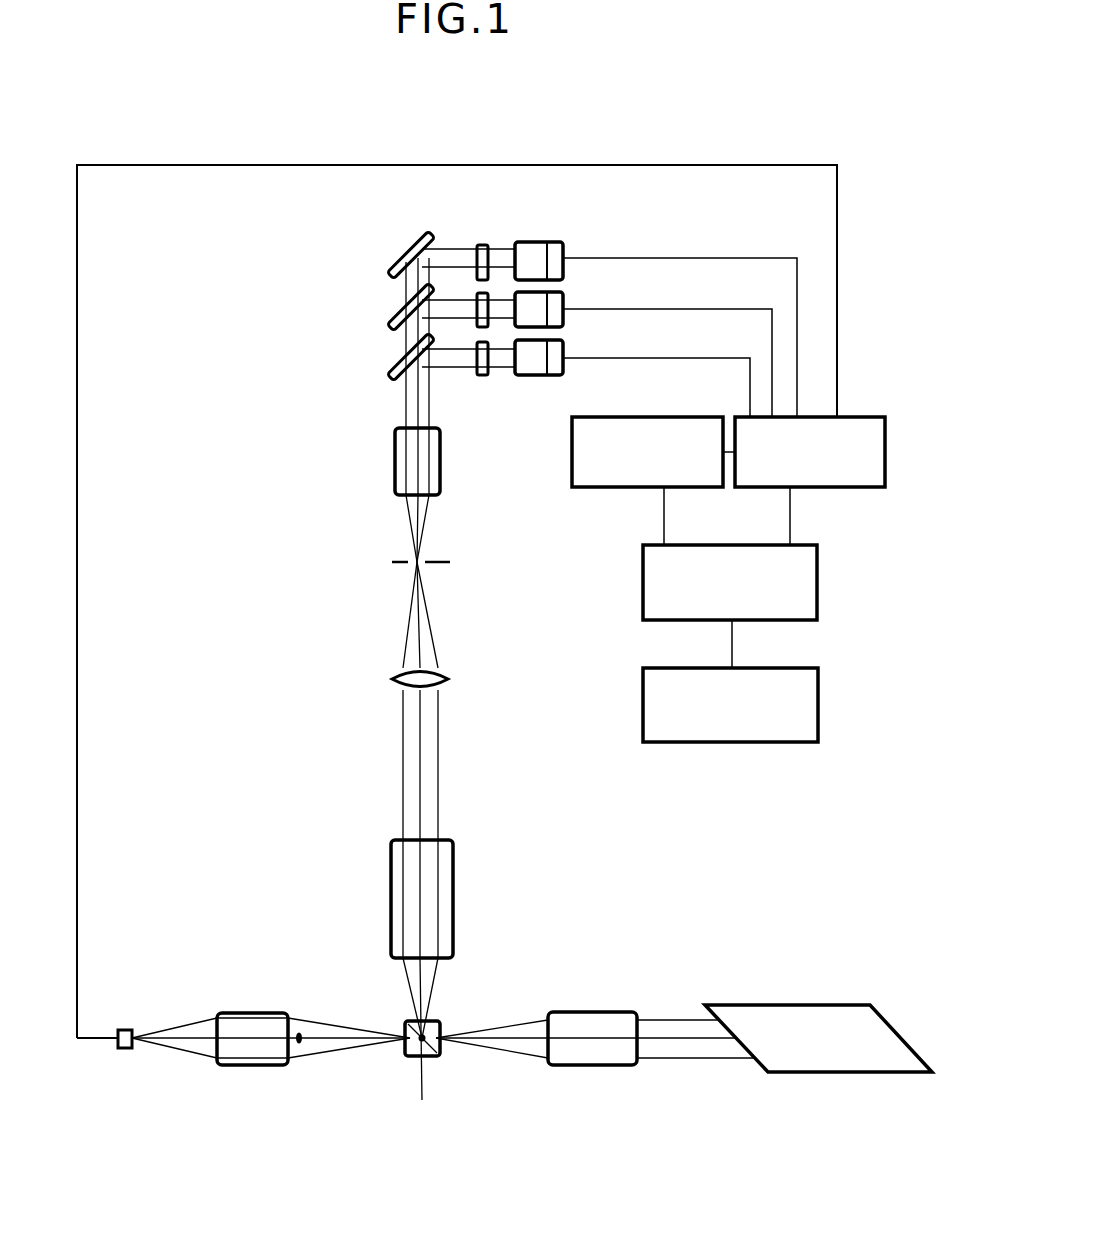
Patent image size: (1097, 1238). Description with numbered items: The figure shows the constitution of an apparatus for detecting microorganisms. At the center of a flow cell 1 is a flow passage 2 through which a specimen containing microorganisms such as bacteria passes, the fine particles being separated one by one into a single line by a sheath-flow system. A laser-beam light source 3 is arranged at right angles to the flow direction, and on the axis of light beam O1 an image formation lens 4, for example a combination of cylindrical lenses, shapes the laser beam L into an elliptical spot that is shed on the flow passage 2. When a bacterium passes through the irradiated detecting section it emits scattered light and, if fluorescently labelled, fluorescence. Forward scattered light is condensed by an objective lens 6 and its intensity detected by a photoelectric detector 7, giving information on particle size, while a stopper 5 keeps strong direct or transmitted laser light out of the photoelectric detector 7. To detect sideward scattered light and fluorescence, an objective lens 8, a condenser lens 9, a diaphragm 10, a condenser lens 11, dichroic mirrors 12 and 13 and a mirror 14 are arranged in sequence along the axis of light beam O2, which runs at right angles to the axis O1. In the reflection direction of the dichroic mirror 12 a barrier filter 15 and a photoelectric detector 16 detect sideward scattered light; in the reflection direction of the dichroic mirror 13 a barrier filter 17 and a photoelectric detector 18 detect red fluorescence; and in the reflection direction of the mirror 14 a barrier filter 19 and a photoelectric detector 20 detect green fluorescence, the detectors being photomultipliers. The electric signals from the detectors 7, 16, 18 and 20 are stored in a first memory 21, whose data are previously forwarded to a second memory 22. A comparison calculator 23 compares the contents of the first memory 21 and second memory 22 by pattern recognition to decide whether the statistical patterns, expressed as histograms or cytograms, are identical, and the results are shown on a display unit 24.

The flow cell 1 is at (406, 1058).
The flow passage 2 is at (434, 1057).
The laser-beam light source 3 is at (818, 1073).
The image formation lens 4 is at (590, 1066).
The stopper 5 is at (299, 1030).
The objective lens 6 is at (255, 1067).
The photoelectric detector 7 is at (121, 1050).
The objective lens 8 is at (391, 870).
The condenser lens 9 is at (392, 679).
The diaphragm 10 is at (398, 563).
The condenser lens 11 is at (395, 465).
The dichroic mirror 12 is at (388, 360).
The dichroic mirror 13 is at (388, 302).
The mirror 14 is at (388, 250).
The barrier filter 15 is at (481, 376).
The photoelectric detector 16 is at (545, 377).
The barrier filter 17 is at (484, 293).
The photoelectric detector 18 is at (545, 329).
The barrier filter 19 is at (482, 245).
The photoelectric detector 20 is at (530, 245).
The first memory 21 is at (812, 487).
The second memory 22 is at (572, 480).
The comparison calculator 23 is at (643, 582).
The display unit 24 is at (643, 704).
The laser beam L is at (653, 1020).
The axis of light beam O1 is at (685, 1040).
The axis of light beam O2 is at (420, 755).